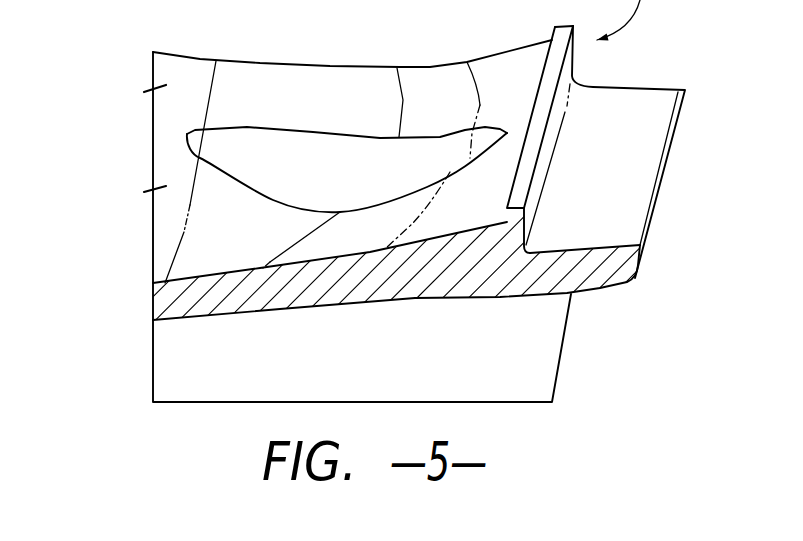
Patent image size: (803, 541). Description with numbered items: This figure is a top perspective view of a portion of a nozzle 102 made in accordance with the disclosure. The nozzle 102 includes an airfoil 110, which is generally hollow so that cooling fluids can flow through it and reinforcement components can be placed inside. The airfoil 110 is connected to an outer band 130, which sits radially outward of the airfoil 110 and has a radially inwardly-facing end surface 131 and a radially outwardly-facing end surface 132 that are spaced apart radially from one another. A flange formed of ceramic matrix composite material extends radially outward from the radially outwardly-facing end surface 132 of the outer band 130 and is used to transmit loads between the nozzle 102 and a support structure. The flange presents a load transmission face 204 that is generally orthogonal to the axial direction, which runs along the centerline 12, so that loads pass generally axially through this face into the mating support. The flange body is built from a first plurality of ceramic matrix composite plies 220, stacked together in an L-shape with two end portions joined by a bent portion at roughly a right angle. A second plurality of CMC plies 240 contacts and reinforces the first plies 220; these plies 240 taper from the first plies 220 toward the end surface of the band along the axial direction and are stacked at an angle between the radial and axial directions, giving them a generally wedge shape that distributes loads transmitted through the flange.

The centerline 12 is at (268, 0).
The nozzle 102 is at (113, 168).
The airfoil 110 is at (148, 370).
The outer band 130 is at (140, 271).
The radially inwardly-facing end surface 131 is at (235, 313).
The radially outwardly-facing end surface 132 is at (185, 253).
The load transmission face 204 is at (560, 108).
The first plurality of ceramic matrix composite plies 220 is at (542, 223).
The second plurality of CMC plies 240 is at (428, 253).